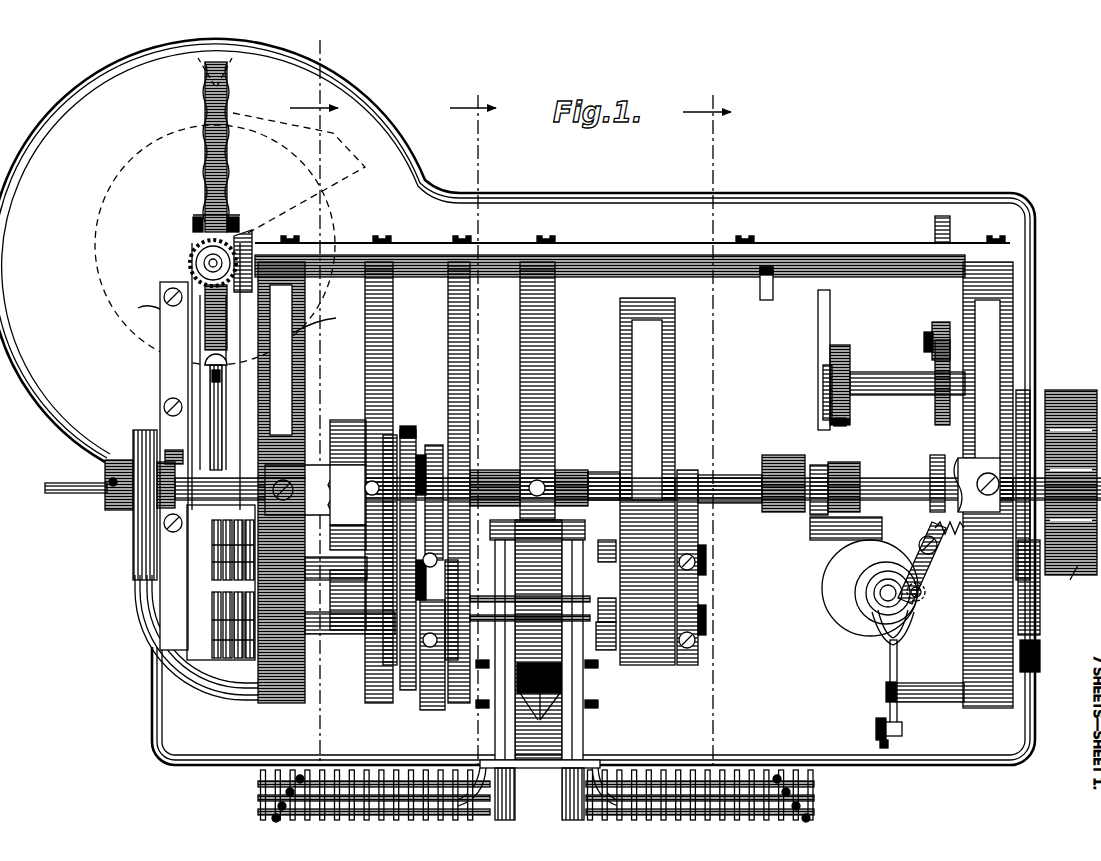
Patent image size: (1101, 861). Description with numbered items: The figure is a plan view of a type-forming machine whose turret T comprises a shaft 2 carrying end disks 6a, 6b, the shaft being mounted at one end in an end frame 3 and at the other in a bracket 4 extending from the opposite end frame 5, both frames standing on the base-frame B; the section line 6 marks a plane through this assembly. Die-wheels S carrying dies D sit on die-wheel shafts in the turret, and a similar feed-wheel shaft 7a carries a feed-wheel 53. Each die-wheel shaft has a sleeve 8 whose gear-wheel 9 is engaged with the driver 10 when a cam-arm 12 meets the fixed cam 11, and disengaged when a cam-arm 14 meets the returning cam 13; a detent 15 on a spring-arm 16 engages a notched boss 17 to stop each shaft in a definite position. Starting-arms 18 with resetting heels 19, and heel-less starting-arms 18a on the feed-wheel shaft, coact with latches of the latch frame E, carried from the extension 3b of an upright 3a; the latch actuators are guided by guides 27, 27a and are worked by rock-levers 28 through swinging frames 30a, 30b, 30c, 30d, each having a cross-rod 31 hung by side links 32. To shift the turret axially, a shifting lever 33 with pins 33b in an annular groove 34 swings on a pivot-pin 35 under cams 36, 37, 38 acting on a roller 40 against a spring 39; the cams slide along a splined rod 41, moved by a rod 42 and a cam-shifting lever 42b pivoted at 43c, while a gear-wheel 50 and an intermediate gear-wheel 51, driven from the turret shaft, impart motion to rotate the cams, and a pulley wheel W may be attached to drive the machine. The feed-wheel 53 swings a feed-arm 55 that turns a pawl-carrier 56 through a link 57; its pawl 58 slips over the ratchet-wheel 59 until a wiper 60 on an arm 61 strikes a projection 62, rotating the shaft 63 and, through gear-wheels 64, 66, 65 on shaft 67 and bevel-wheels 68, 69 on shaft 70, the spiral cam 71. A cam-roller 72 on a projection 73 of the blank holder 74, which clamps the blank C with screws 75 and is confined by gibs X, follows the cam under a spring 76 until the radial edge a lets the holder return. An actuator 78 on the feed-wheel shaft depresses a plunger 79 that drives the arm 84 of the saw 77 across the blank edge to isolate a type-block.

The shaft 2 is at (487, 478).
The end frame 3 is at (1014, 330).
The upright 3a is at (538, 640).
The extension of the upright 3b is at (546, 385).
The bracket 4 is at (116, 582).
The end frame 5 is at (265, 708).
The section line 6 is at (707, 427).
The end disk 6a is at (306, 382).
The end disk 6b is at (652, 400).
The feed-wheel shaft 7a is at (722, 476).
The sleeve 8 is at (438, 455).
The gear-wheel 9 is at (392, 440).
The driver 10 is at (378, 386).
The fixed cam 11 is at (410, 428).
The cam-arm 12 is at (434, 445).
The returning cam 13 is at (430, 706).
The cam-arm 14 is at (440, 470).
The detent 15 is at (696, 562).
The spring-arm 16 is at (698, 532).
The boss 17 is at (707, 572).
The starting-arm 18 is at (608, 624).
The starting-arm 18a is at (508, 470).
The resetting heel 19 is at (601, 637).
The guide 27 is at (505, 598).
The guide 27a is at (510, 636).
The rock-lever 28 is at (378, 778).
The swinging frame 30a is at (296, 779).
The swinging frame 30b is at (286, 792).
The swinging frame 30c is at (278, 806).
The swinging frame 30d is at (272, 818).
The cross-rod 31 is at (432, 782).
The side link 32 is at (1040, 470).
The shifting lever 33 is at (935, 532).
The pin 33b is at (934, 455).
The annular groove 34 is at (958, 460).
The pivot-pin 35 is at (924, 537).
The cam 36 is at (850, 590).
The cam 37 is at (878, 600).
The cam 38 is at (866, 585).
The spring 39 is at (938, 540).
The roller 40 is at (918, 602).
The splined rod 41 is at (888, 598).
The rod 42 is at (876, 726).
The cam-shifting lever 42b is at (897, 662).
The pivot 43c is at (886, 690).
The gear-wheel 50 is at (1040, 663).
The intermediate gear-wheel 51 is at (1040, 626).
The feed-wheel 53 is at (785, 455).
The feed-arm 55 is at (766, 300).
The pawl-carrier 56 is at (830, 410).
The link 57 is at (822, 323).
The pawl 58 is at (846, 422).
The ratchet-wheel 59 is at (850, 358).
The wiper 60 is at (835, 540).
The arm 61 is at (815, 515).
The projection 62 is at (840, 428).
The shaft 63 is at (888, 372).
The gear-wheel 64 is at (935, 410).
The gear-wheel 65 is at (935, 232).
The intermediate gear-wheel 66 is at (932, 310).
The shaft 67 is at (705, 266).
The bevel-wheel 68 is at (246, 236).
The bevel-wheel 69 is at (192, 262).
The shaft 70 is at (206, 266).
The cam 71 is at (110, 228).
The cam-roller 72 is at (205, 352).
The projection 73 is at (210, 370).
The blank holder 74 is at (192, 392).
The screw 75 is at (172, 450).
The spring 76 is at (204, 160).
The saw 77 is at (70, 488).
The actuator 78 is at (348, 432).
The plunger 79 is at (350, 580).
The arm 84 is at (82, 490).
The radial edge a is at (365, 170).
The base-frame B is at (752, 660).
The blank C is at (216, 376).
The die D is at (224, 580).
The frame E is at (537, 751).
The die-wheel S is at (221, 582).
The turret T is at (594, 442).
The pulley wheel W is at (1065, 582).
The gib X is at (235, 317).